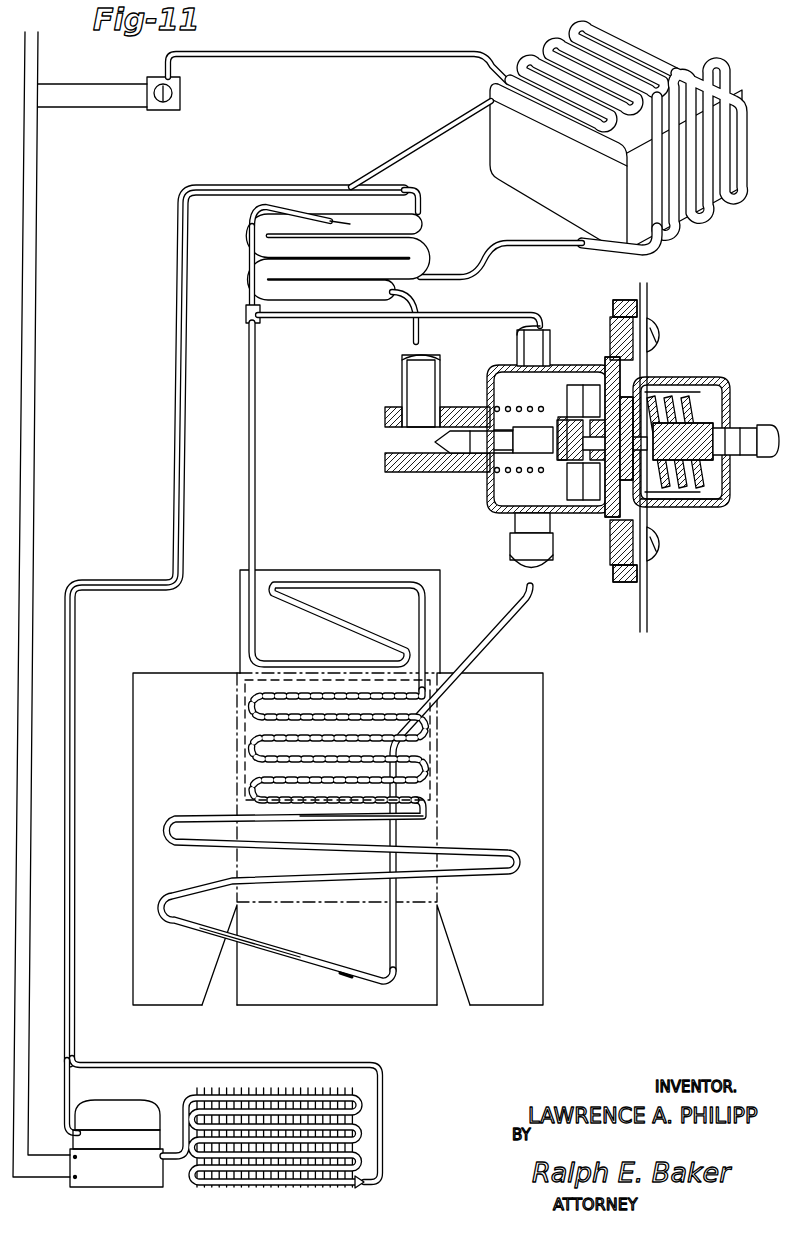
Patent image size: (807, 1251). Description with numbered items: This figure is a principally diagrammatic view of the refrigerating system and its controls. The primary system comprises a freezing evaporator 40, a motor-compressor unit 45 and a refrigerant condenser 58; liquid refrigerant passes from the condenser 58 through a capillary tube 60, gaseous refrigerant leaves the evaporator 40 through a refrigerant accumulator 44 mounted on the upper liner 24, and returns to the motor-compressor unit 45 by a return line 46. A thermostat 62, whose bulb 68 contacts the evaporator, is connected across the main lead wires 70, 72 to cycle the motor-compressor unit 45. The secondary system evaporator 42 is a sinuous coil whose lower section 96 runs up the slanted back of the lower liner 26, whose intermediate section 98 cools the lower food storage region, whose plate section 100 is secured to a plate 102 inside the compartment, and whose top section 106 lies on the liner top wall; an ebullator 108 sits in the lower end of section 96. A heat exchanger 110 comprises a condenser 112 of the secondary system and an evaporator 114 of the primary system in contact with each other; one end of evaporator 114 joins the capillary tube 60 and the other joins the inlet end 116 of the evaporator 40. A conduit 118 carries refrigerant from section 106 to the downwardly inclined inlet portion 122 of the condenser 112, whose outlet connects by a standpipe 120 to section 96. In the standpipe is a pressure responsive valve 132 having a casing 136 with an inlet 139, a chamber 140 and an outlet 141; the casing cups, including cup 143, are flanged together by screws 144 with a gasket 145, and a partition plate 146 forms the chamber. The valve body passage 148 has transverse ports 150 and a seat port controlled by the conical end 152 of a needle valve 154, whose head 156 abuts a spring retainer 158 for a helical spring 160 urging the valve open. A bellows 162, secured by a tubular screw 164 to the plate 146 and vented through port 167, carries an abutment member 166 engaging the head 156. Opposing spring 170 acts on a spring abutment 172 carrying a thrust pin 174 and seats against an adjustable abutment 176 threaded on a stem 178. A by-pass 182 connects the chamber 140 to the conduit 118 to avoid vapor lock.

The upper sheet metal liner 24 is at (672, 62).
The lower sheet metal liner 26 is at (648, 598).
The freezing evaporator 40 is at (722, 188).
The secondary evaporator coil 42 is at (470, 852).
The refrigerant accumulator 44 is at (547, 137).
The motor-compressor unit 45 is at (138, 1100).
The refrigerant return line 46 is at (440, 140).
The refrigerant condenser 58 is at (364, 1095).
The capillary tube 60 is at (410, 190).
The temperature-responsive control 62 is at (180, 92).
The bulb 68 is at (498, 72).
The main lead wire 70 is at (102, 84).
The main lead wire 72 is at (24, 160).
The lower coil section 96 is at (258, 950).
The intermediate coil section 98 is at (366, 842).
The plate cooling section 100 is at (430, 745).
The plate 102 is at (432, 772).
The top coil section 106 is at (332, 580).
The ebullator 108 is at (346, 977).
The heat exchanger 110 is at (426, 229).
The heat exchanger condenser 112 is at (406, 287).
The heat exchanger evaporator 114 is at (422, 256).
The inlet end of freezing evaporator 116 is at (580, 248).
The conduit 118 is at (256, 450).
The standpipe 120 is at (421, 325).
The inlet portion 122 is at (302, 211).
The pressure responsive valve 132 is at (730, 490).
The casing 136 is at (600, 516).
The inlet 139 is at (410, 437).
The chamber 140 is at (492, 505).
The outlet 141 is at (548, 547).
The cup member 143 is at (712, 393).
The screws 144 is at (663, 334).
The gasket 145 is at (613, 308).
The partition plate 146 is at (628, 352).
The passage 148 is at (462, 460).
The transverse ports 150 is at (514, 472).
The conical end 152 is at (425, 470).
The needle valve 154 is at (468, 432).
The head 156 is at (560, 462).
The spring retainer 158 is at (521, 405).
The helical coil spring 160 is at (495, 408).
The bellows 162 is at (576, 385).
The tubular screw 164 is at (600, 437).
The abutment member 166 is at (572, 496).
The port 167 is at (680, 507).
The spring 170 is at (690, 398).
The spring abutment 172 is at (607, 462).
The thrust pin 174 is at (630, 396).
The adjustable abutment 176 is at (726, 392).
The stem 178 is at (760, 458).
The by-pass 182 is at (313, 319).